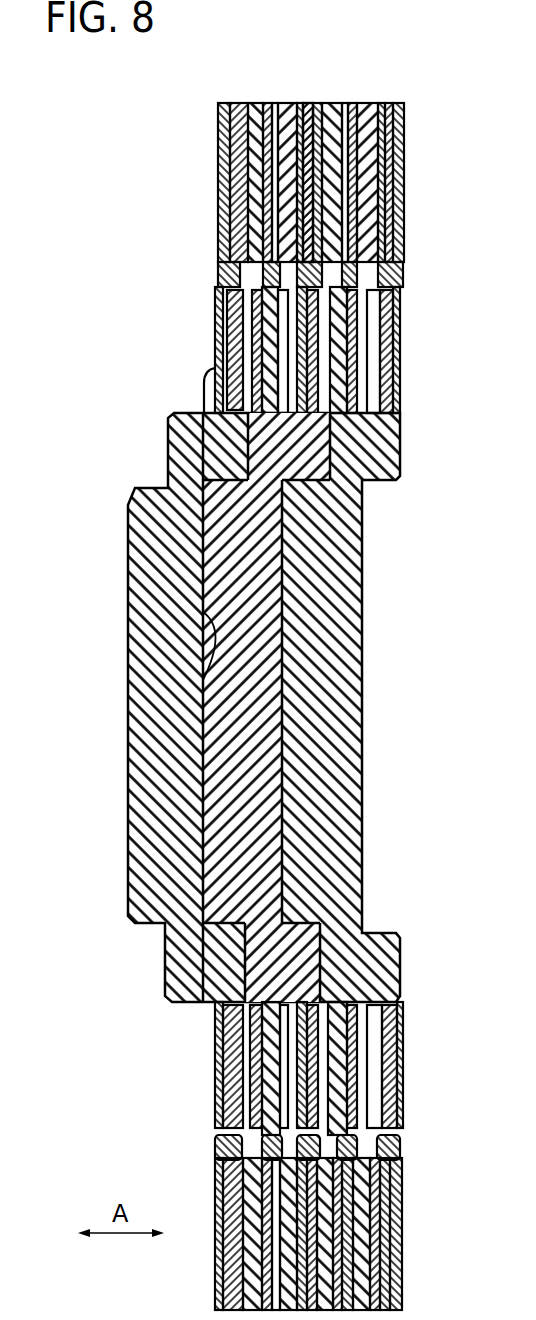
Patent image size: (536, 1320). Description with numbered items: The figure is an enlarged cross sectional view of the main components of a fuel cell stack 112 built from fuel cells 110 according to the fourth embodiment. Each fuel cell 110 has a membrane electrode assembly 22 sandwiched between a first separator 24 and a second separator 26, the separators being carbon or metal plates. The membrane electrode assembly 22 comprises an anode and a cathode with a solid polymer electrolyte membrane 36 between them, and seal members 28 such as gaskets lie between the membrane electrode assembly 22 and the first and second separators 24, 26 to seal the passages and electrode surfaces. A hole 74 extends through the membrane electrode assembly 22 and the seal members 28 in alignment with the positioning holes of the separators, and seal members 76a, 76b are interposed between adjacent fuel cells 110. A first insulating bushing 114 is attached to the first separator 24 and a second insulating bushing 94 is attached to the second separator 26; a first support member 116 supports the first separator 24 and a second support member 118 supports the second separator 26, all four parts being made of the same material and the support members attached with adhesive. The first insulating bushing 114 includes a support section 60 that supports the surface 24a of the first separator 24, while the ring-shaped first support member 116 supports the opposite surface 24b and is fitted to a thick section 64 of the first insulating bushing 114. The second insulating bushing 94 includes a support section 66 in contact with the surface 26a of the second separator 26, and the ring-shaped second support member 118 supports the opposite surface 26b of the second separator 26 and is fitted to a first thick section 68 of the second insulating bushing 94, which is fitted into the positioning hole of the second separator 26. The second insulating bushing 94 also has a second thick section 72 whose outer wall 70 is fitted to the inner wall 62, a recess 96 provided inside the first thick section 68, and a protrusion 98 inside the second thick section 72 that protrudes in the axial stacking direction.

The fuel cell stack 112 is at (77, 119).
The fuel cell 110 is at (350, 40).
The first separator 24 is at (268, 98).
The membrane electrode assembly 22 is at (287, 98).
The second separator 26 is at (309, 98).
The seal member 76a is at (236, 146).
The seal member 28 is at (268, 170).
The seal member 76b is at (236, 210).
The hole 74 is at (222, 270).
The solid polymer electrolyte membrane 36 is at (302, 133).
The support section 60 is at (372, 272).
The first support member 116 is at (230, 298).
The support section 66 is at (345, 305).
The first insulating bushing 114 is at (258, 337).
The second support member 118 is at (230, 370).
The outer wall 70 is at (200, 405).
The thick section 64 is at (215, 380).
The second thick section 72 is at (190, 438).
The inner wall 62 is at (205, 457).
The first thick section 68 is at (350, 428).
The second insulating bushing 94 is at (368, 578).
The protrusion 98 is at (200, 615).
The recess 96 is at (200, 683).
The surface of the second separator 26a is at (280, 1088).
The second separator protrusion 26b is at (330, 1090).
The surface of the first separator 24b is at (290, 1133).
The surface of the first separator 24a is at (330, 1140).